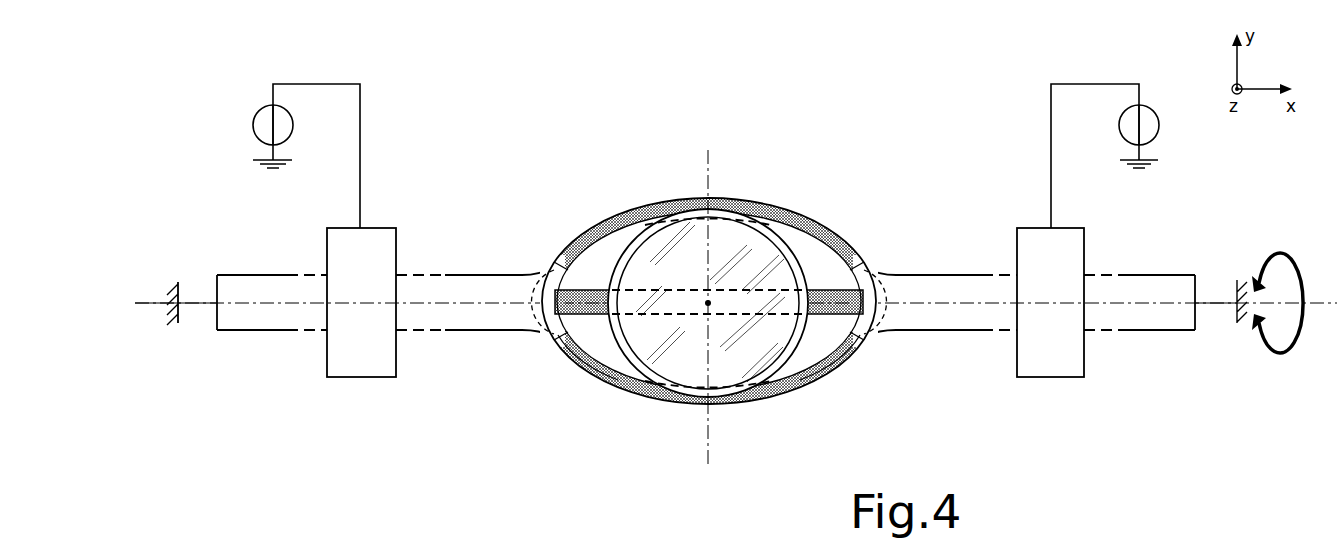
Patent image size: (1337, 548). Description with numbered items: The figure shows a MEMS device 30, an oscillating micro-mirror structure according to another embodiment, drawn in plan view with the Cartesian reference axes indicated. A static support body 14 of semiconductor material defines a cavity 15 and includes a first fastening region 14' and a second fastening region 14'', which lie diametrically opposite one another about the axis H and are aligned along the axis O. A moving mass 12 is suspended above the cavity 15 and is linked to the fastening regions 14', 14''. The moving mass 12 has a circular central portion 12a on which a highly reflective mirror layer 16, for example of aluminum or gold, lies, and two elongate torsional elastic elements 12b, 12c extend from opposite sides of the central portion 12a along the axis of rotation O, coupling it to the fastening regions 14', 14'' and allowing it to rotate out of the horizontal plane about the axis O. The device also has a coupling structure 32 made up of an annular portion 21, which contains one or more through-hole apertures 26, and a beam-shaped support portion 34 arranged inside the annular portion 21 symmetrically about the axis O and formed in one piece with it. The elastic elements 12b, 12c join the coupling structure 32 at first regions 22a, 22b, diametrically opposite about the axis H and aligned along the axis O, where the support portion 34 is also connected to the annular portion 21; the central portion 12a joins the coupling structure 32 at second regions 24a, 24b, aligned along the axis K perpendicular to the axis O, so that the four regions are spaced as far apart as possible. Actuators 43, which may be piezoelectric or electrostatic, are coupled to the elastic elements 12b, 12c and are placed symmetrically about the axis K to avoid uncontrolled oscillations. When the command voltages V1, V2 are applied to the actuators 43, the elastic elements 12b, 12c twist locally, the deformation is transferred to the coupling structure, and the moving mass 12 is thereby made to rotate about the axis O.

The MEMS device 30 is at (410, 82).
The cavity 15 is at (473, 386).
The moving mass 12 is at (776, 391).
The central portion 12a is at (613, 335).
The elastic element 12b is at (453, 283).
The elastic element 12c is at (966, 283).
The static support body 14 is at (188, 344).
The first fastening region 14' is at (176, 264).
The second fastening region 14'' is at (1225, 260).
The mirror layer 16 is at (798, 333).
The annular portion 21 is at (600, 228).
The first region 22a is at (541, 284).
The first region 22b is at (882, 283).
The second region 24a is at (699, 392).
The second region 24b is at (679, 206).
The through-hole aperture 26 is at (824, 278).
The coupling structure 32 is at (866, 360).
The support portion 34 is at (543, 335).
The actuators 43 is at (348, 378).
The axis K is at (708, 188).
The axis H is at (696, 322).
The axis of rotation O is at (1316, 300).
The command voltage V1 is at (254, 125).
The command voltage V2 is at (1155, 125).